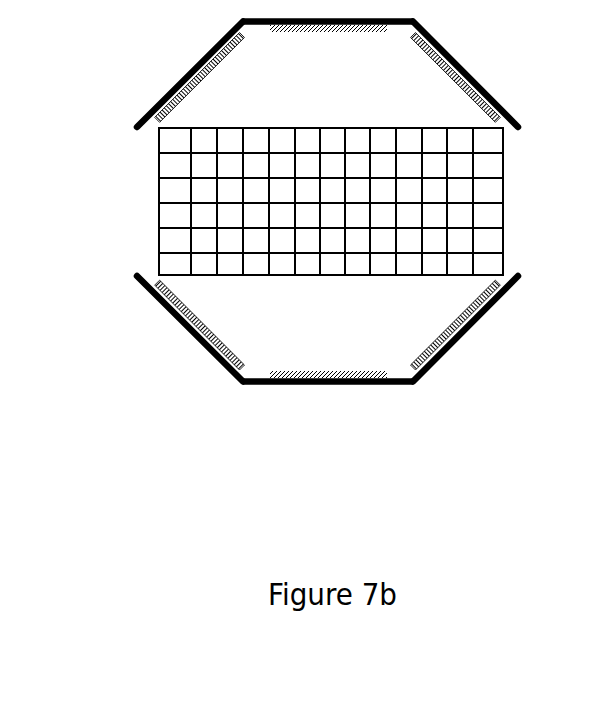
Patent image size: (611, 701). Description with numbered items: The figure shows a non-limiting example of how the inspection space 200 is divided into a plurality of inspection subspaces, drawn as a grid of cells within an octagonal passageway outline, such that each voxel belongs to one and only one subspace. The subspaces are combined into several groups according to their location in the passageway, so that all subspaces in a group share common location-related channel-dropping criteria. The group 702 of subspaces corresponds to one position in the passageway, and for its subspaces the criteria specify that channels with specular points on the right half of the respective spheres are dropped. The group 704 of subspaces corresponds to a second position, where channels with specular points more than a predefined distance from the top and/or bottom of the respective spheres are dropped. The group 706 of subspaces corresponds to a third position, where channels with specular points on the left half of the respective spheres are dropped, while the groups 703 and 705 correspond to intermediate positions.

The inspection space 200 is at (263, 285).
The group of subspaces 702 is at (517, 195).
The group of subspaces 703 is at (408, 122).
The group of subspaces 704 is at (340, 278).
The group of subspaces 705 is at (244, 122).
The group of subspaces 706 is at (148, 190).